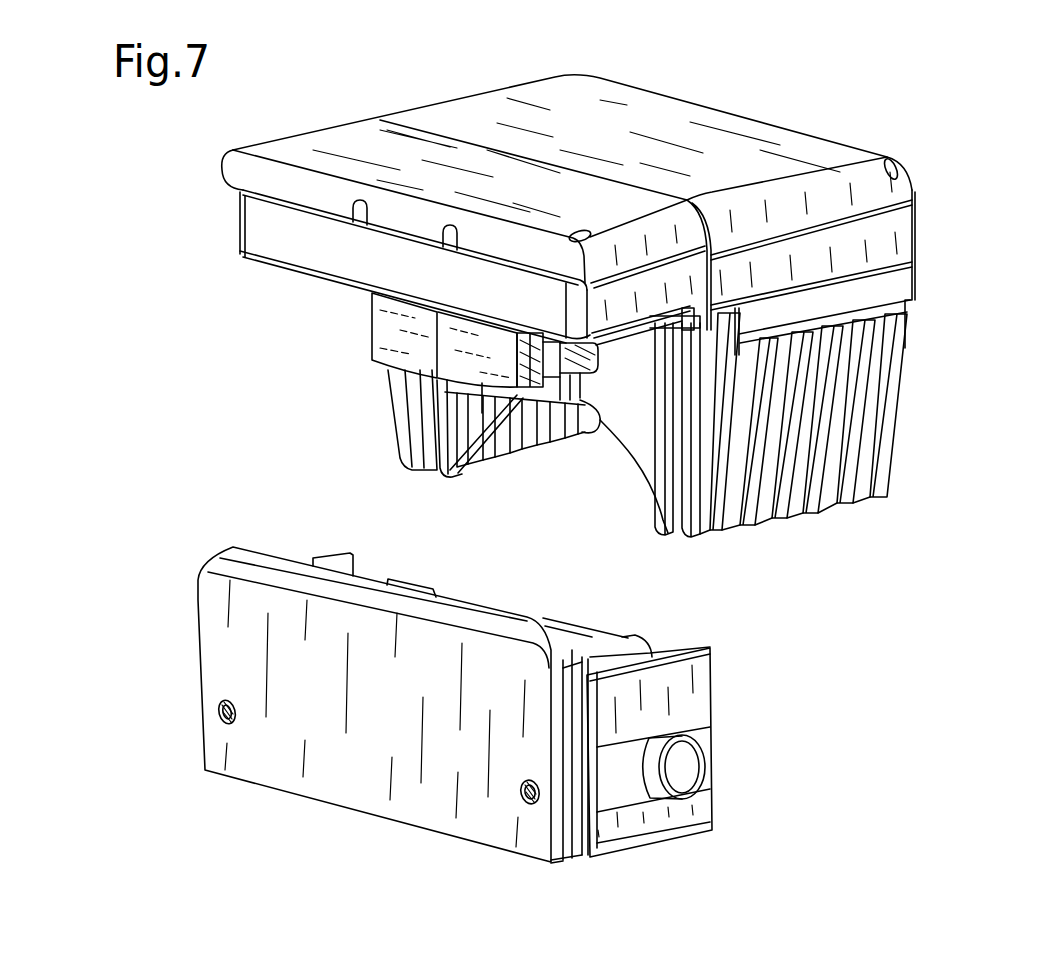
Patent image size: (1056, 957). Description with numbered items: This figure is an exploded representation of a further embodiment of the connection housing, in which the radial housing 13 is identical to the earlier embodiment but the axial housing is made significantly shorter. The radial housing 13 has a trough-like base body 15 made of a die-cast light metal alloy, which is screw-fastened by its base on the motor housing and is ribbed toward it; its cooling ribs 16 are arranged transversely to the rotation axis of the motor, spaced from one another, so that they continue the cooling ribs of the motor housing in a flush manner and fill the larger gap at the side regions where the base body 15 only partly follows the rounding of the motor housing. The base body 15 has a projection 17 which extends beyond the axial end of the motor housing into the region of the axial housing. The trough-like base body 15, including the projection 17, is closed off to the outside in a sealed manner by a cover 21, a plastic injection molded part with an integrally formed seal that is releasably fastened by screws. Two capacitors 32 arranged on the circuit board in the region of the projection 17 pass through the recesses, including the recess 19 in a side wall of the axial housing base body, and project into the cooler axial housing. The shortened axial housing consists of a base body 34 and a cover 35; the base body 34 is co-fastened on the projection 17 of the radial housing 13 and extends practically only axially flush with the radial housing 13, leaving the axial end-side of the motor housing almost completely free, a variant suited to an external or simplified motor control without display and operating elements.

The radial housing 13 is at (623, 339).
The base body 15 is at (895, 243).
The cooling ribs 16 is at (834, 502).
The projection 17 is at (420, 287).
The recess 19 is at (674, 712).
The cover 21 is at (612, 146).
The capacitors 32 is at (382, 323).
The base body 34 is at (698, 703).
The cover 35 is at (412, 729).